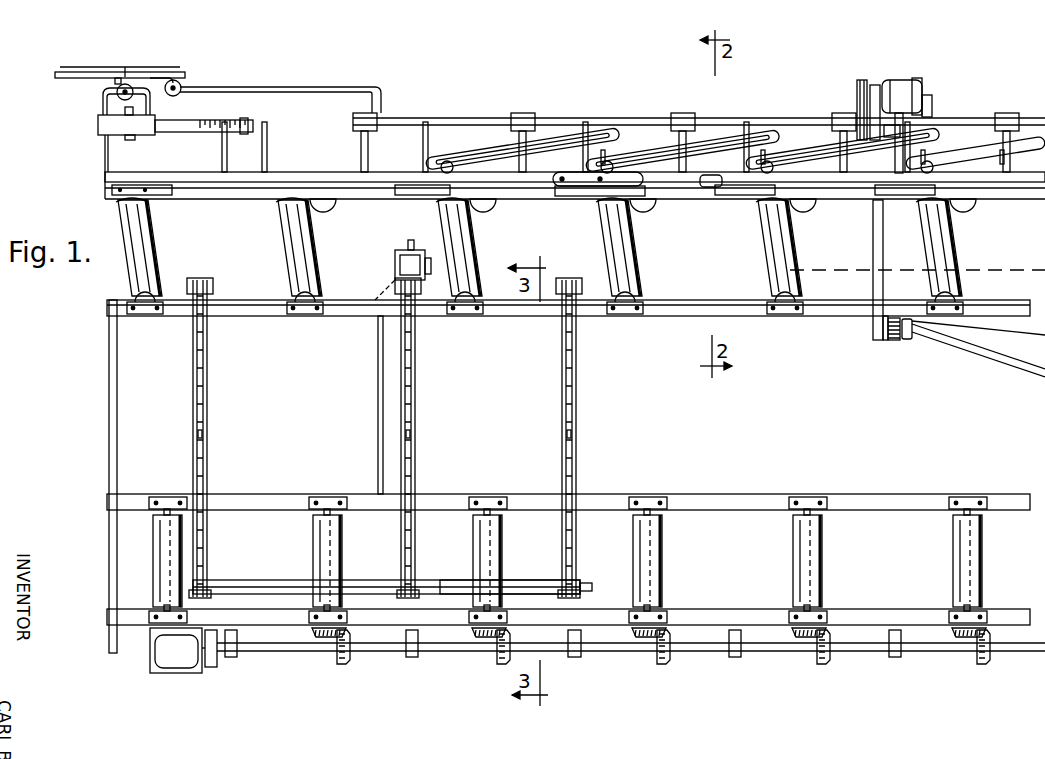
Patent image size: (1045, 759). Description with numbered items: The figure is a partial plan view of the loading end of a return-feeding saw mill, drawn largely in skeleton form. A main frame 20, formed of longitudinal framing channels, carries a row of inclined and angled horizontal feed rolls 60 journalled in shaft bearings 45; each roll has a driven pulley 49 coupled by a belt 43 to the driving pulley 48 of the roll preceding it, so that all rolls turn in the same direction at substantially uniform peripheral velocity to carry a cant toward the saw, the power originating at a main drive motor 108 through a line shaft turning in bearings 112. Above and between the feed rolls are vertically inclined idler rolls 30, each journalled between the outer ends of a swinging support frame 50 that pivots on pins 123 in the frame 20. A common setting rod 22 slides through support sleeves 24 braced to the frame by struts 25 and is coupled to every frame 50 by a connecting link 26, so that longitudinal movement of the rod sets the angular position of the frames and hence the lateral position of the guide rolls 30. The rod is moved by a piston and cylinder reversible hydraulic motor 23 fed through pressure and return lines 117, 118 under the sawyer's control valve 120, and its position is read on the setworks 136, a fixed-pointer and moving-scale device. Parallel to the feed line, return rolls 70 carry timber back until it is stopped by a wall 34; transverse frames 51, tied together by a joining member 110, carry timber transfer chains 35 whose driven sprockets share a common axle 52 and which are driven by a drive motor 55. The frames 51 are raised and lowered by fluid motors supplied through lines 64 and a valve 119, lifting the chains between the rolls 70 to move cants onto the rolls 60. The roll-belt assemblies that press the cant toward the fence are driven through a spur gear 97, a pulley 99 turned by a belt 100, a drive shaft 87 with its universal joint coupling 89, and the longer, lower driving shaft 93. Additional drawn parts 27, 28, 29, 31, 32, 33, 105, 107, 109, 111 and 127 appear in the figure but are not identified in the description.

The main frame 20 is at (252, 300).
The common setting rod 22 is at (691, 118).
The piston and cylinder reversible hydraulic motor 23 is at (142, 126).
The support sleeves 24 is at (366, 113).
The struts 25 is at (344, 122).
The connecting link 26 is at (267, 122).
The coupling 27 is at (211, 667).
The motor 28 is at (178, 660).
The shaft bearings 29 is at (236, 657).
The vertically inclined idler rolls 30 is at (331, 200).
The bevel gear 31 is at (330, 638).
The bevel gear 32 is at (344, 662).
The drive shaft 33 is at (608, 652).
The wall 34 is at (116, 457).
The timber transfer chains 35 is at (202, 439).
The belts 43 is at (485, 156).
The shaft bearings 45 is at (148, 316).
The driving pulleys 48 is at (602, 150).
The driven pulleys 49 is at (449, 161).
The adjustable swinging support frames 50 is at (565, 192).
The transverse frames 51 is at (190, 398).
The common axle 52 is at (244, 580).
The drive motor 55 is at (408, 255).
The inclined and angled horizontal feed rolls 60 is at (155, 240).
The fluid pressure and return lines 64 is at (378, 400).
The return rolls 70 is at (153, 556).
The drive shaft 87 is at (995, 354).
The universal joint coupling 89 is at (910, 338).
The driving shaft 93 is at (1003, 330).
The spur gear 97 is at (897, 341).
The pulley 99 is at (885, 340).
The belt 100 is at (873, 243).
The motor 105 is at (888, 80).
The pulley 107 is at (860, 112).
The main drive motor 108 is at (925, 82).
The bracket 109 is at (932, 104).
The joining member 110 is at (539, 580).
The shaft 111 is at (876, 85).
The bearings 112 is at (905, 128).
The pressure line 117 is at (128, 84).
The return line 118 is at (85, 67).
The hydraulic or pneumatic valve 119 is at (178, 80).
The control valve 120 is at (103, 96).
The pins 123 is at (707, 187).
The top rail 127 is at (200, 172).
The setworks 136 is at (245, 120).